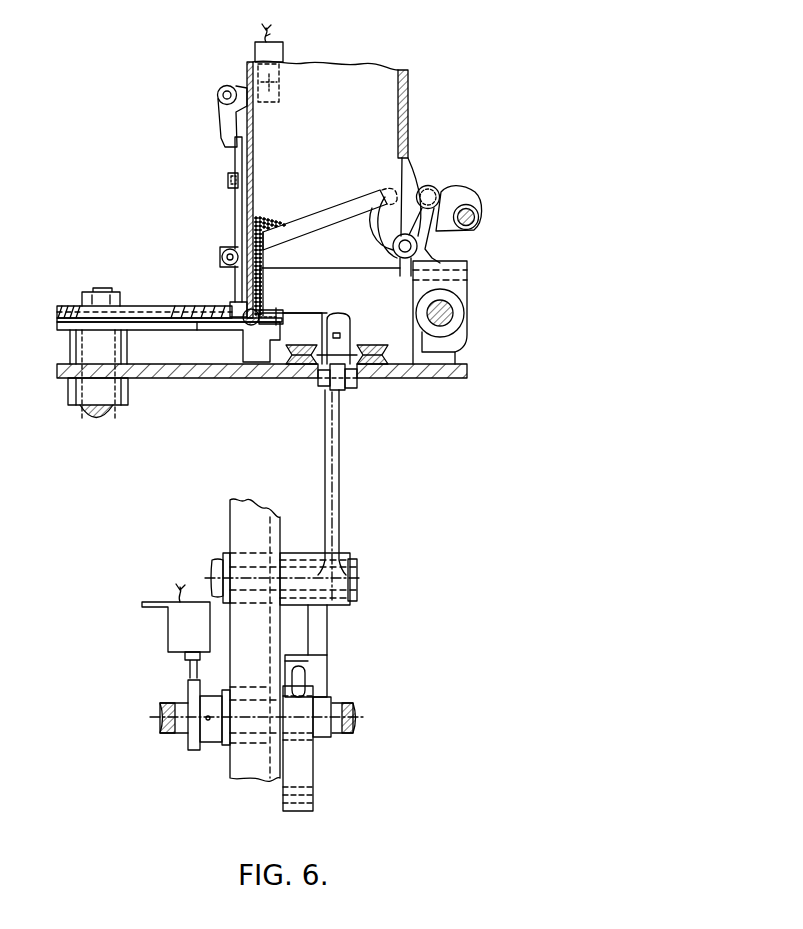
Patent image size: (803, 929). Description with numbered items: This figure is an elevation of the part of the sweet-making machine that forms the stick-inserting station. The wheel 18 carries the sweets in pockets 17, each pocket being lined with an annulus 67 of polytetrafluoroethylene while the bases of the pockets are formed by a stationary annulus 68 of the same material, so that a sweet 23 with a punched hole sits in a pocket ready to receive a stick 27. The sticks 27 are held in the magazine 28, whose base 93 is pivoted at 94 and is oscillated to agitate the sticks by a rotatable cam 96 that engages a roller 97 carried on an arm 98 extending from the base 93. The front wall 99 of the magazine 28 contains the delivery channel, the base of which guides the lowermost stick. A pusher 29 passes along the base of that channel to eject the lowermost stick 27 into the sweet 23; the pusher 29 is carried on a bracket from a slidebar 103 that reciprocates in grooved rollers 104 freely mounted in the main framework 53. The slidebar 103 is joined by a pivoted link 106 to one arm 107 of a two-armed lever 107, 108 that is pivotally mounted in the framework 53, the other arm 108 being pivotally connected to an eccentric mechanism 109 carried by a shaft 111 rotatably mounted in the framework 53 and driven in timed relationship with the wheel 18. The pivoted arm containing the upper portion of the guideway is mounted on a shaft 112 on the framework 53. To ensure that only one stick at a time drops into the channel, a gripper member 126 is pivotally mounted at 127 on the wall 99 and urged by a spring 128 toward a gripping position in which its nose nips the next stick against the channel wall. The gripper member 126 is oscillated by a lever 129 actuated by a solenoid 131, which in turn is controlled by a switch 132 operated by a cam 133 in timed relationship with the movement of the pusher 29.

The pockets 17 is at (205, 303).
The wheel 18 is at (70, 309).
The sweet 23 is at (206, 328).
The stick 27 is at (266, 223).
The magazine 28 is at (372, 110).
The pusher 29 is at (263, 313).
The main framework 53 is at (462, 379).
The annulus 67 is at (182, 308).
The stationary annulus 68 is at (150, 331).
The base 93 is at (362, 201).
The pivot 94 is at (400, 258).
The rotatable cam 96 is at (462, 201).
The roller 97 is at (433, 195).
The arm 98 is at (418, 229).
The front wall 99 is at (253, 168).
The slidebar 103 is at (341, 347).
The grooved rollers 104 is at (383, 336).
The pivoted link 106 is at (352, 389).
The arm of two-armed lever 107 is at (333, 486).
The arm of two-armed lever 108 is at (317, 641).
The eccentric mechanism 109 is at (298, 766).
The shaft 111 is at (341, 716).
The shaft 112 is at (447, 313).
The gripper member 126 is at (240, 306).
The pivot 127 is at (224, 251).
The spring 128 is at (229, 179).
The lever 129 is at (225, 119).
The solenoid 131 is at (270, 48).
The switch 132 is at (180, 626).
The cam 133 is at (192, 697).